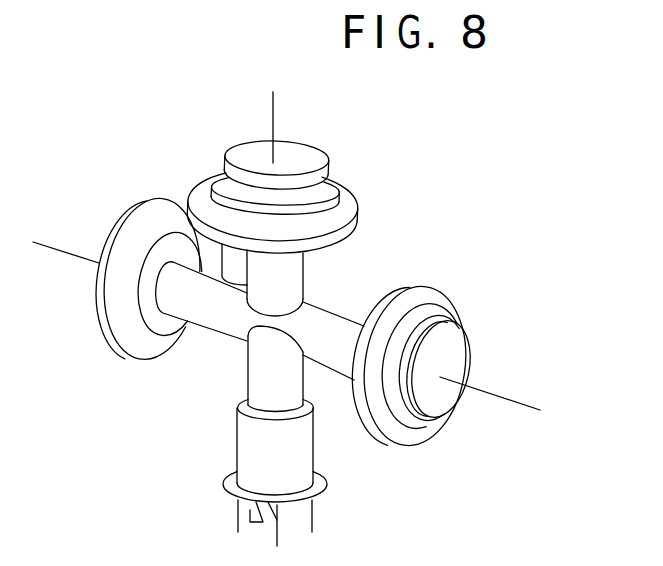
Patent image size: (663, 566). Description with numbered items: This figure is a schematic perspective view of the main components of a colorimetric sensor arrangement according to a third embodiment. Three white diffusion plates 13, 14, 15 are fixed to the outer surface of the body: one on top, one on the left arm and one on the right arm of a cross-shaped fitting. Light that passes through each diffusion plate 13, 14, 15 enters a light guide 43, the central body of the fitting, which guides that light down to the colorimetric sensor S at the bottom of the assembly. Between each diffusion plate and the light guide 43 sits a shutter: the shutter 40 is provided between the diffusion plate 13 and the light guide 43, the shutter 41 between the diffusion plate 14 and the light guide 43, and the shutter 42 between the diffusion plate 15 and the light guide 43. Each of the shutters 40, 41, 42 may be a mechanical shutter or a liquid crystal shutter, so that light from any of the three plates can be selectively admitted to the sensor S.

The white diffusion plate 14 is at (317, 157).
The shutter 41 is at (359, 207).
The light guide 43 is at (248, 380).
The white diffusion plate 15 is at (107, 240).
The shutter 42 is at (128, 332).
The shutter 40 is at (427, 286).
The white diffusion plate 13 is at (455, 350).
The colorimetric sensor S is at (252, 513).